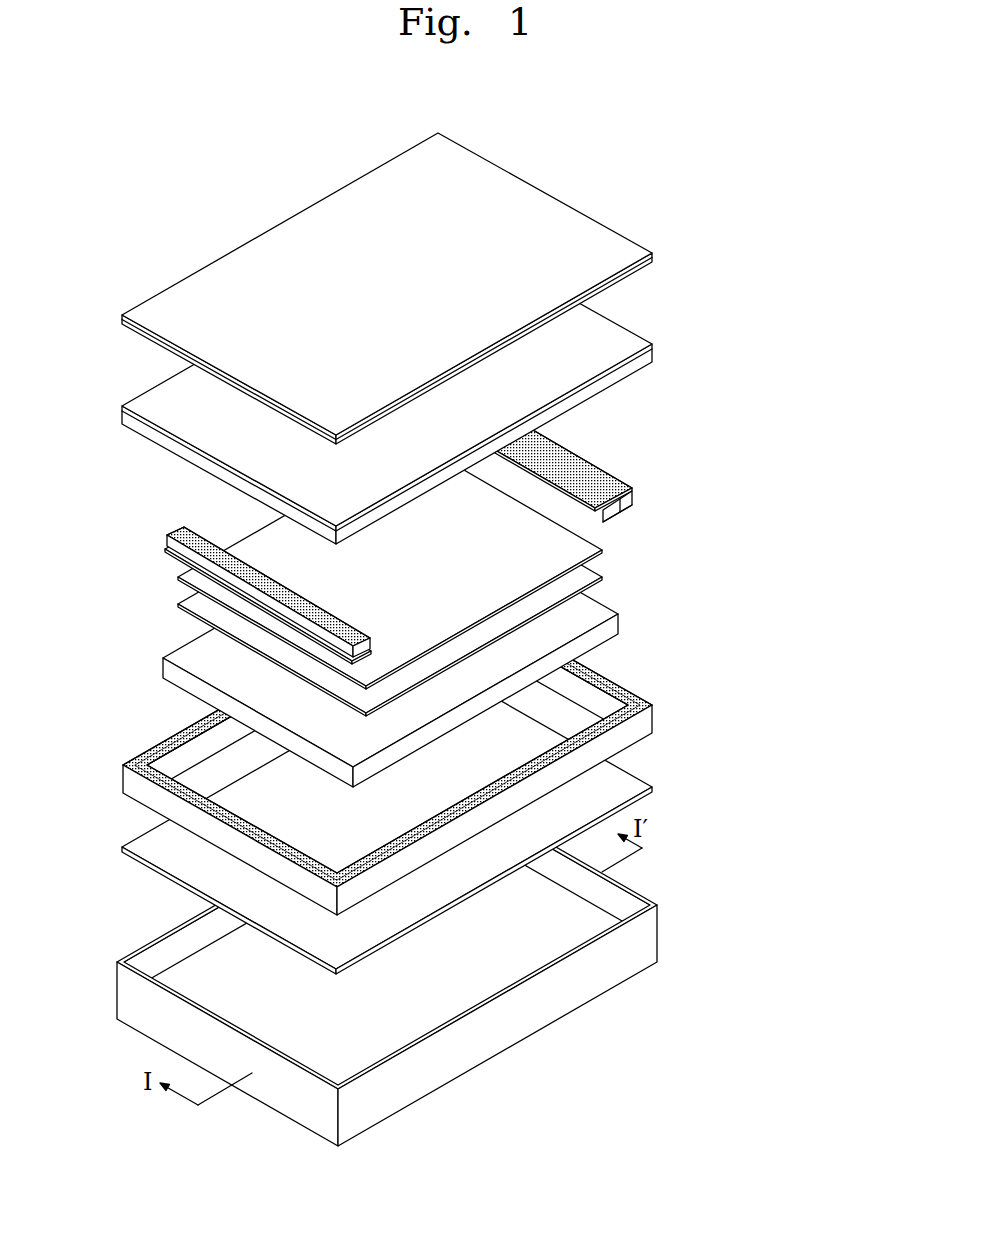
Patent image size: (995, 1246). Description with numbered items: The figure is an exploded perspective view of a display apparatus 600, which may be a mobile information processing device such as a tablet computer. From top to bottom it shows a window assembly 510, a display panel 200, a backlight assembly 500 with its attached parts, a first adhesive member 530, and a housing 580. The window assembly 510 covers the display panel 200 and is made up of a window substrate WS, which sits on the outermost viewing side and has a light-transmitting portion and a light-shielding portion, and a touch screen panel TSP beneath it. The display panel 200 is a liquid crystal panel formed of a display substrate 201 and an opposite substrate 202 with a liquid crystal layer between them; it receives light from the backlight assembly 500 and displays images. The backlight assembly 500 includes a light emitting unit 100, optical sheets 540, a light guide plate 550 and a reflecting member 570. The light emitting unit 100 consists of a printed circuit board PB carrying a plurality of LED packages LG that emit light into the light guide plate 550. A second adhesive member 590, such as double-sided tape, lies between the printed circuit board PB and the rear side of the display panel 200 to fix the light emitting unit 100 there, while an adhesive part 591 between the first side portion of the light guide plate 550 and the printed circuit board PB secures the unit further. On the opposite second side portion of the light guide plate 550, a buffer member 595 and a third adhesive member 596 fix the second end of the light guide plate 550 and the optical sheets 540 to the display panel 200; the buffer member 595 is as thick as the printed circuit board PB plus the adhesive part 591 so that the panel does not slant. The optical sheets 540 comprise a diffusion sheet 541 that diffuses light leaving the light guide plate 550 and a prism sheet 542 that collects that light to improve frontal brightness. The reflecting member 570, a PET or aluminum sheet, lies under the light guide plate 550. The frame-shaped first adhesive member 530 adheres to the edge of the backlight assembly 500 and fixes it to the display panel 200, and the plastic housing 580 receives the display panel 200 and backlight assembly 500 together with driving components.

The display apparatus 600 is at (582, 150).
The window assembly 510 is at (448, 288).
The window substrate WS is at (617, 253).
The touch screen panel TSP is at (646, 267).
The display panel 200 is at (448, 384).
The opposite substrate 202 is at (617, 350).
The display substrate 201 is at (645, 363).
The backlight assembly 500 is at (775, 428).
The second adhesive member 590 is at (635, 479).
The light emitting unit 100 is at (628, 476).
The printed circuit board PB is at (633, 491).
The LED packages LG is at (631, 509).
The adhesive part 591 is at (615, 517).
The optical sheets 540 is at (476, 578).
The diffusion sheet 541 is at (580, 549).
The prism sheet 542 is at (586, 578).
The light guide plate 550 is at (597, 614).
The first adhesive member 530 is at (165, 748).
The reflecting member 570 is at (614, 788).
The housing 580 is at (638, 943).
The third adhesive member 596 is at (184, 529).
The buffer member 595 is at (168, 550).